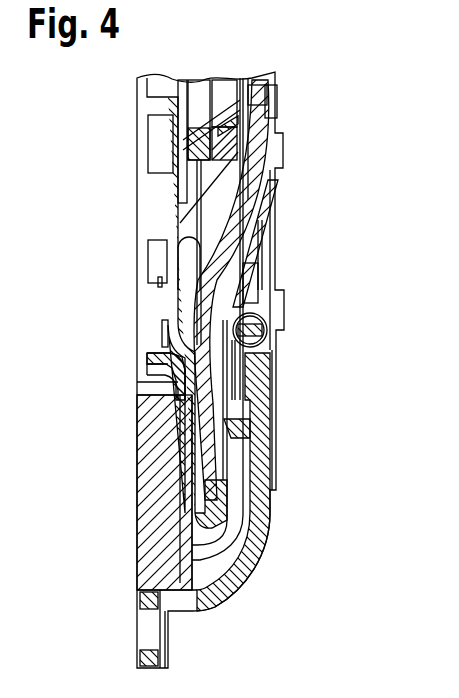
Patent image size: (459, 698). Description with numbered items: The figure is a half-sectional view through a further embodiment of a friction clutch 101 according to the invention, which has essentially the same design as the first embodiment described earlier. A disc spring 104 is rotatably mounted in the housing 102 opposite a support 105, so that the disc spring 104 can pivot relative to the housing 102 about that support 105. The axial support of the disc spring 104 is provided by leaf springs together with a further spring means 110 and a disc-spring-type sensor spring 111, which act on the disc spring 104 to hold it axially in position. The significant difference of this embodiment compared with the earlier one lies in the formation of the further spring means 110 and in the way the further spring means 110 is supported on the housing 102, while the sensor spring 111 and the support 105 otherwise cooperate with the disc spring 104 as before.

The friction clutch 101 is at (339, 62).
The housing 102 is at (250, 500).
The disc spring 104 is at (247, 207).
The support 105 is at (273, 433).
The further spring means 110 is at (166, 328).
The sensor spring 111 is at (197, 468).